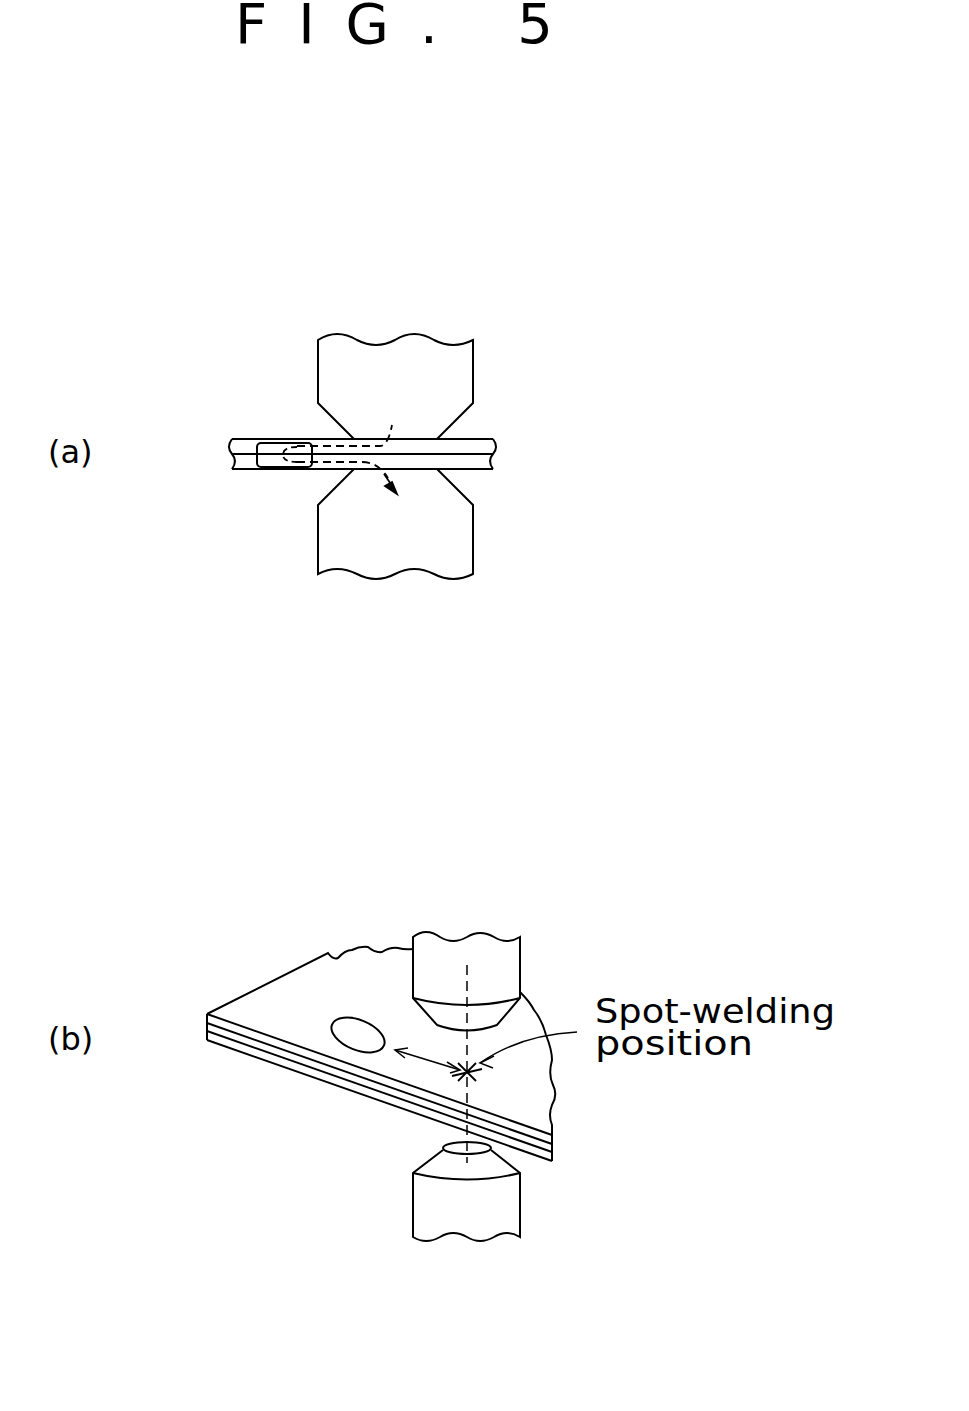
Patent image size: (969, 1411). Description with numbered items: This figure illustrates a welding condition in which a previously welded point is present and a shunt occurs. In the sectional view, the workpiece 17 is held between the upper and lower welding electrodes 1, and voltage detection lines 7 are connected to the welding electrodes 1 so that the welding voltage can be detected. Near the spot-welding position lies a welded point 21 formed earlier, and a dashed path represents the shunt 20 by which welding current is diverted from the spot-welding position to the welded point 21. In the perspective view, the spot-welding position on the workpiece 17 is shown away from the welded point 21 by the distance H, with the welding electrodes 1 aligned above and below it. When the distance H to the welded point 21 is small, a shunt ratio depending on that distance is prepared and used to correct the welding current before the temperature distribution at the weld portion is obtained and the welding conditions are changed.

The welding electrodes 1 is at (443, 382).
The voltage detection lines 7 is at (473, 445).
The workpiece 17 is at (290, 1000).
The shunt 20 is at (337, 443).
The welded point 21 is at (275, 458).
The distance H is at (427, 1060).